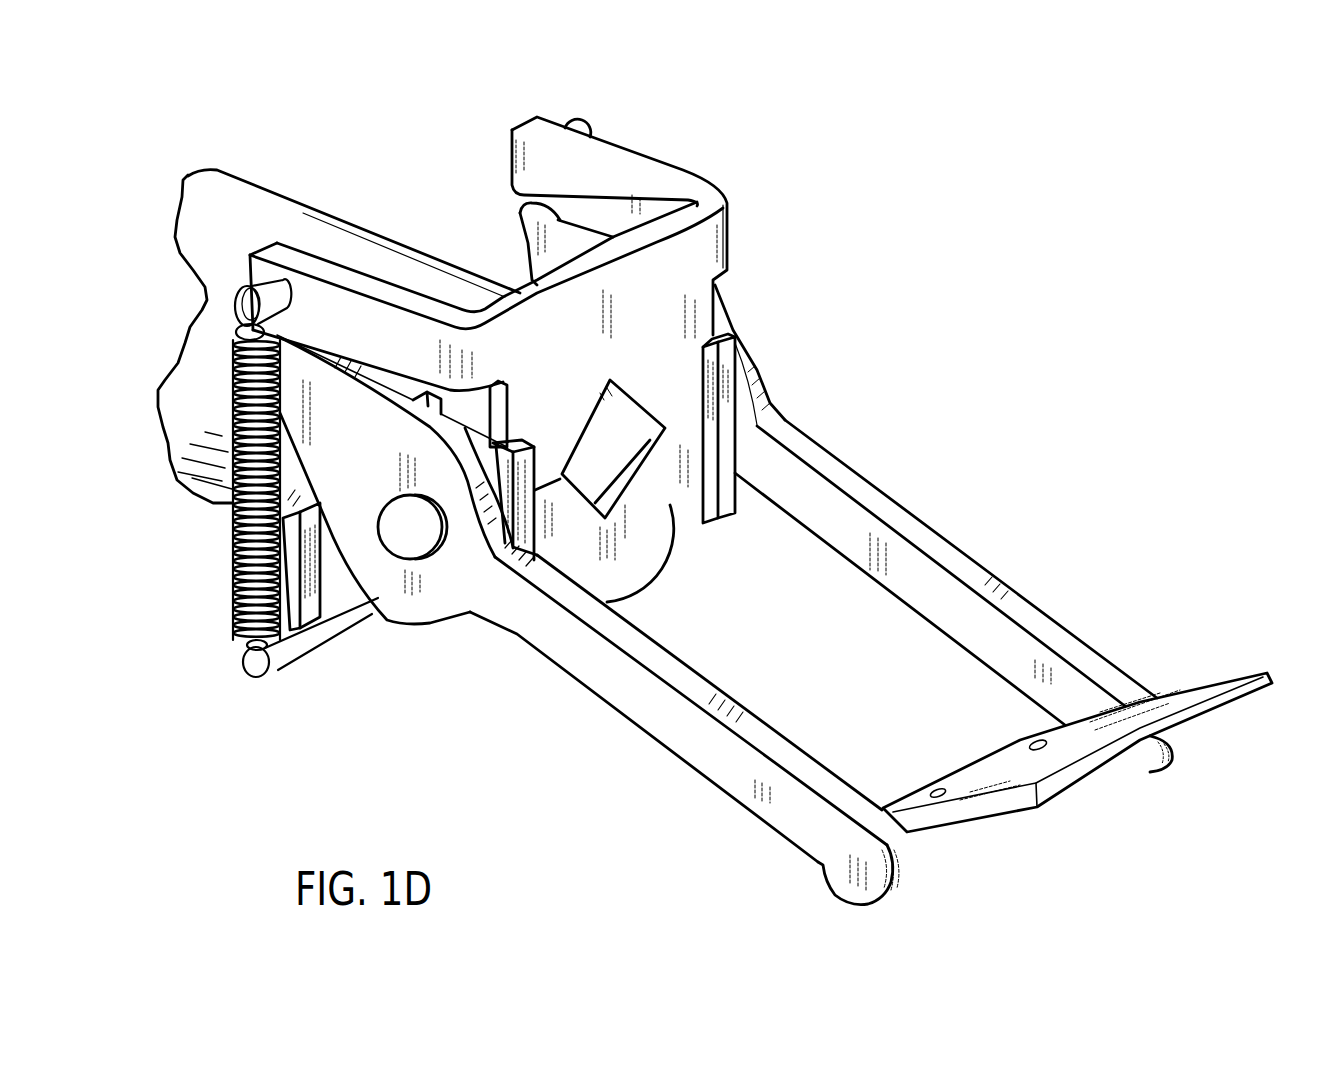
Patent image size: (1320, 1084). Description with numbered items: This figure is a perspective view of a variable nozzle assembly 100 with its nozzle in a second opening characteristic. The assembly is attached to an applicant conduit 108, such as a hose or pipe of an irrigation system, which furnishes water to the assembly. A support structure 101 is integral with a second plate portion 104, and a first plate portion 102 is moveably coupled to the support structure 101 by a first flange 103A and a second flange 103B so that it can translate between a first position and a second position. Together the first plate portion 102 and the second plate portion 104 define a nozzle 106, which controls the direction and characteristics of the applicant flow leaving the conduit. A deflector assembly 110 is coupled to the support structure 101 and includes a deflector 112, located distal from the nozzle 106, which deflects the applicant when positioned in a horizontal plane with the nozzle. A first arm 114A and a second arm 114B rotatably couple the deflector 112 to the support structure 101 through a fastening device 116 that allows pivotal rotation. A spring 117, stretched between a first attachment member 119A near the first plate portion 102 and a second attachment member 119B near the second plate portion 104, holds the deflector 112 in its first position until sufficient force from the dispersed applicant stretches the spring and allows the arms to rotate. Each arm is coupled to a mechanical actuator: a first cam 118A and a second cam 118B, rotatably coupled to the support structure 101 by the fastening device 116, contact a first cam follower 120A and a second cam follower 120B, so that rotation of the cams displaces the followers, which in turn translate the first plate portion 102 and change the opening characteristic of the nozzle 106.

The variable nozzle assembly 100 is at (752, 140).
The support structure 101 is at (330, 597).
The first plate portion 102 is at (678, 330).
The first flange 103A is at (508, 445).
The second flange 103B is at (728, 360).
The second plate portion 104 is at (633, 553).
The nozzle 106 is at (598, 457).
The applicant conduit 108 is at (233, 217).
The deflector assembly 110 is at (997, 537).
The deflector 112 is at (1183, 700).
The first arm 114A is at (773, 747).
The second arm 114B is at (1050, 627).
The fastening device 116 is at (417, 552).
The spring 117 is at (236, 575).
The first cam 118A is at (453, 590).
The second cam 118B is at (530, 230).
The first attachment member 119A is at (267, 283).
The second attachment member 119B is at (312, 638).
The first cam follower 120A is at (328, 272).
The second cam follower 120B is at (688, 172).